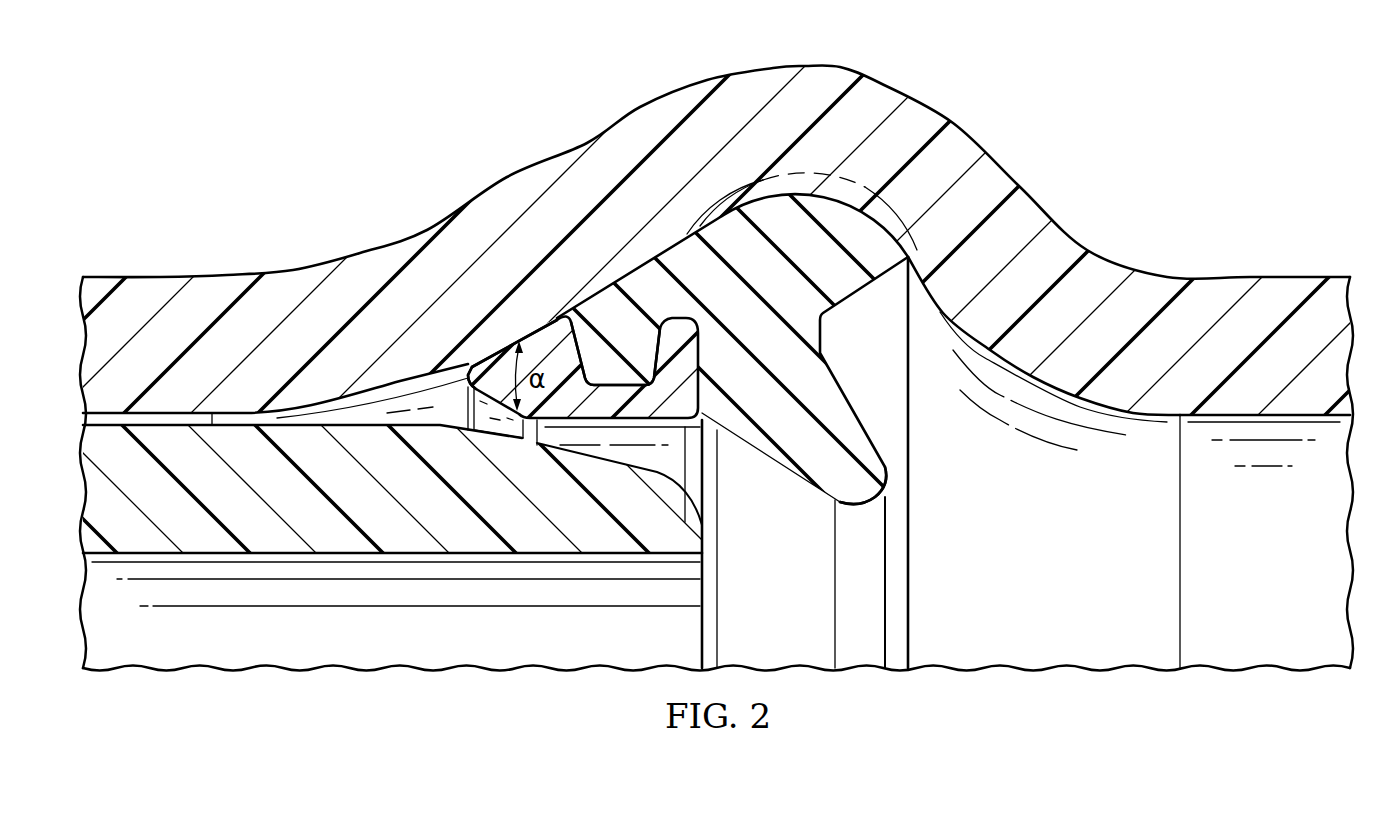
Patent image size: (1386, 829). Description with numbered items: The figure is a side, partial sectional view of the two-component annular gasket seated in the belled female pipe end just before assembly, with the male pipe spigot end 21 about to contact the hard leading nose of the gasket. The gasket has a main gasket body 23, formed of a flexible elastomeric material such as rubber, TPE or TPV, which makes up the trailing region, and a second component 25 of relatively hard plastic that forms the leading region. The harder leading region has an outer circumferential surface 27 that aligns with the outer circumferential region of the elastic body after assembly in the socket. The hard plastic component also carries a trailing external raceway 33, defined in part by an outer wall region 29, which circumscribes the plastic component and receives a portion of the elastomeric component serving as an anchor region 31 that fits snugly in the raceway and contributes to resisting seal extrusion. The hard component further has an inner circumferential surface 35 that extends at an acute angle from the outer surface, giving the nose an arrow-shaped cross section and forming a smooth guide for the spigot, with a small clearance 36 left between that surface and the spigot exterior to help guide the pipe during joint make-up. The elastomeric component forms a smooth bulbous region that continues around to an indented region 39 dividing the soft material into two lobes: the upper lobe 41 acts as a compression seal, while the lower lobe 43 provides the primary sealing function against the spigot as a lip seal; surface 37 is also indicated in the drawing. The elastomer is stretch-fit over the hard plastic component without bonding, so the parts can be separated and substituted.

The male pipe spigot end 21 is at (303, 268).
The main gasket body 23 is at (677, 228).
The second component 25 is at (533, 311).
The outer circumferential surface 27 is at (478, 356).
The outer wall region 29 is at (690, 315).
The anchor region 31 is at (617, 328).
The trailing external raceway 33 is at (601, 407).
The inner circumferential surface 35 is at (512, 426).
The clearance 36 is at (528, 443).
The curved surface 37 is at (786, 195).
The indented region 39 is at (895, 295).
The upper lobe 41 is at (817, 173).
The lower lobe 43 is at (858, 487).